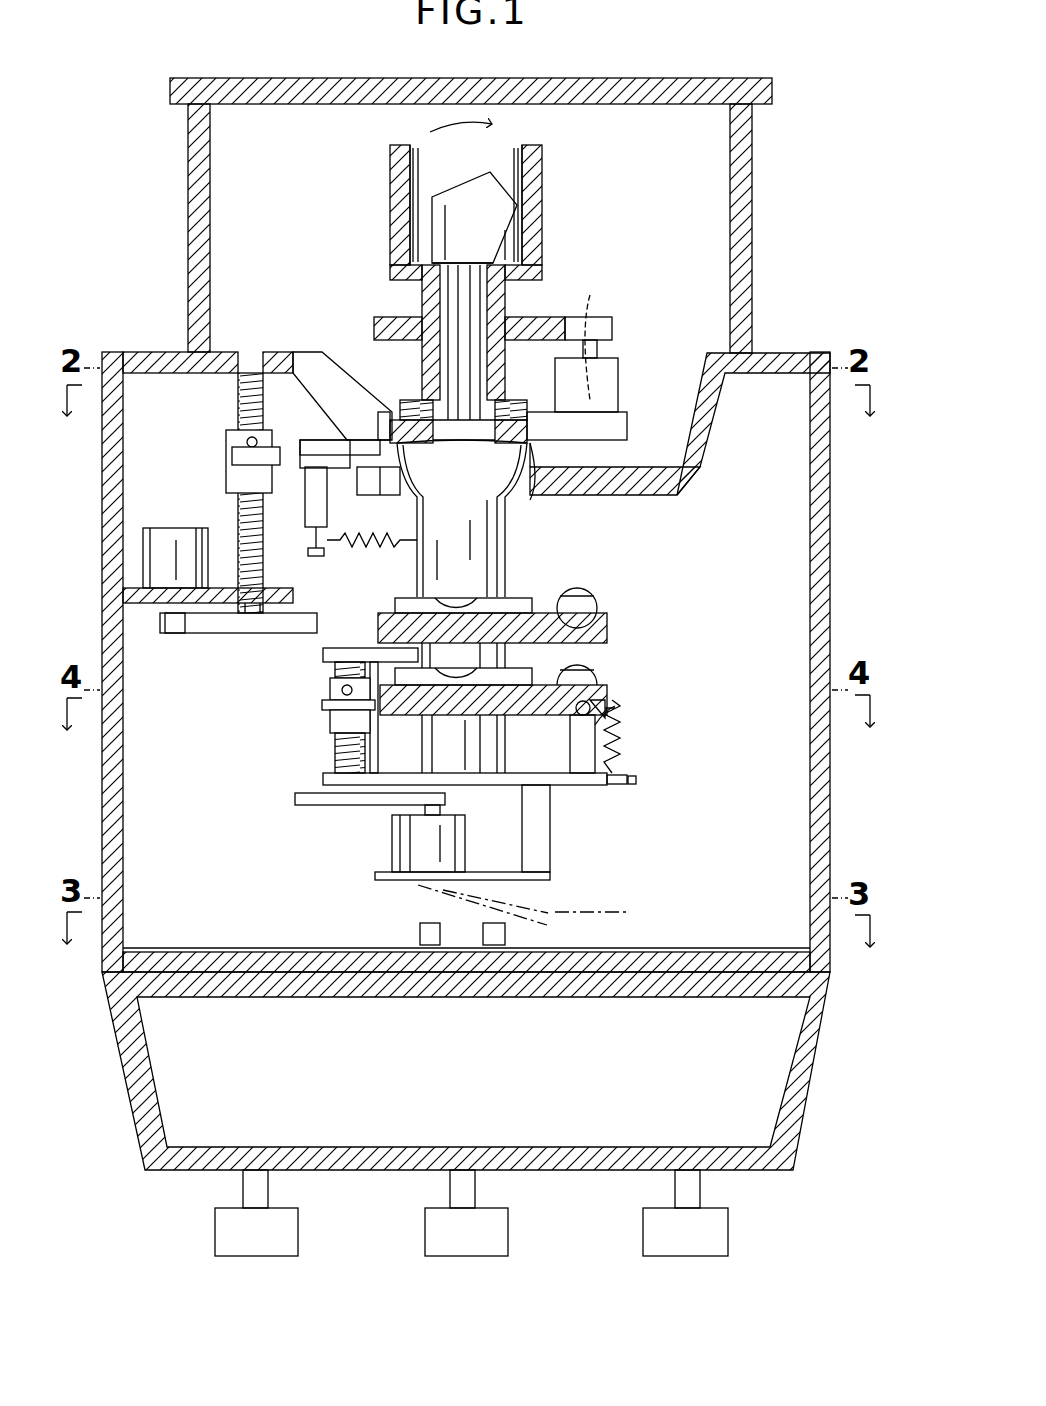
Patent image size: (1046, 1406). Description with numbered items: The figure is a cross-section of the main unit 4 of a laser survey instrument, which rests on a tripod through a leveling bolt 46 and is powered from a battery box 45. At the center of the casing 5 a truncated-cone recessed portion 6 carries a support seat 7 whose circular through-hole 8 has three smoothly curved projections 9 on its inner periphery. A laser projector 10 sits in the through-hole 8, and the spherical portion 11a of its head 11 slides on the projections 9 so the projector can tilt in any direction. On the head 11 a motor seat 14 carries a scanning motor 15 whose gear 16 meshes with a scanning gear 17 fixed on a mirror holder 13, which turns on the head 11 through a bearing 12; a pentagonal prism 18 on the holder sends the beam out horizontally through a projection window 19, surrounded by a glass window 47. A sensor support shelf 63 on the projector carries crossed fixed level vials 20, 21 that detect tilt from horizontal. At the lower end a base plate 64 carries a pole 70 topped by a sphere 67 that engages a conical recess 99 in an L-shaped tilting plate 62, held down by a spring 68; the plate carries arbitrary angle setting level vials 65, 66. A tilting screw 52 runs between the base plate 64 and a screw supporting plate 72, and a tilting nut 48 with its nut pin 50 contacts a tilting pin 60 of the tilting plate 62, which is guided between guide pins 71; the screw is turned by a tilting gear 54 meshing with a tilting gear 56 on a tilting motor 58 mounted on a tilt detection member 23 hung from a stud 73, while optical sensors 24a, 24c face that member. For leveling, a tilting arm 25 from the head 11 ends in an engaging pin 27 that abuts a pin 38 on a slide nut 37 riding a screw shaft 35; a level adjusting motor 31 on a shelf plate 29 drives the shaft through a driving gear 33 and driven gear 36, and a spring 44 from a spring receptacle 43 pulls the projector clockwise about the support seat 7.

The main unit 4 is at (842, 962).
The casing 5 is at (795, 350).
The recessed portion 6 is at (705, 440).
The support seat 7 is at (640, 462).
The circular through-hole 8 is at (393, 487).
The projections 9 is at (520, 495).
The laser projector 10 is at (485, 552).
The head 11 is at (535, 412).
The spherical portion 11a is at (375, 422).
The bearing 12 is at (415, 400).
The mirror holder 13 is at (535, 180).
The motor seat 14 is at (622, 410).
The scanning motor 15 is at (612, 400).
The gear 16 is at (583, 325).
The scanning gear 17 is at (545, 318).
The pentagonal prism 18 is at (395, 218).
The projection window 19 is at (415, 200).
The fixed level vial 20 is at (415, 602).
The fixed level vial 21 is at (598, 605).
The tilt detection member 23 is at (580, 915).
The optical sensor 24a is at (420, 935).
The optical sensor 24c is at (505, 938).
The tilting arm 25 is at (395, 415).
The engaging pin 27 is at (235, 457).
The shelf plate 29 is at (145, 603).
The level adjusting motor 31 is at (172, 548).
The driving gear 33 is at (173, 625).
The screw shaft 35 is at (262, 562).
The driven gear 36 is at (238, 635).
The slide nut 37 is at (228, 438).
The pin 38 is at (258, 440).
The spring receptacle 43 is at (305, 490).
The spring 44 is at (352, 550).
The battery box 45 is at (190, 1172).
The leveling bolt 46 is at (490, 1238).
The glass window 47 is at (745, 212).
The tilting nut 48 is at (332, 688).
The nut pin 50 is at (342, 690).
The tilting screw 52 is at (340, 762).
The tilting gear 54 is at (340, 808).
The tilting gear 56 is at (445, 803).
The tilting motor 58 is at (440, 848).
The tilting pin 60 is at (325, 712).
The tilting plate 62 is at (535, 715).
The sensor support shelf 63 is at (607, 630).
The base plate 64 is at (560, 785).
The arbitrary angle setting level vial 65 is at (575, 672).
The arbitrary angle setting level vial 66 is at (520, 675).
The sphere 67 is at (615, 702).
The spring 68 is at (620, 750).
The pole 70 is at (580, 760).
The guide pins 71 is at (378, 752).
The screw supporting plate 72 is at (330, 652).
The stud 73 is at (550, 878).
The conical recess 99 is at (600, 728).